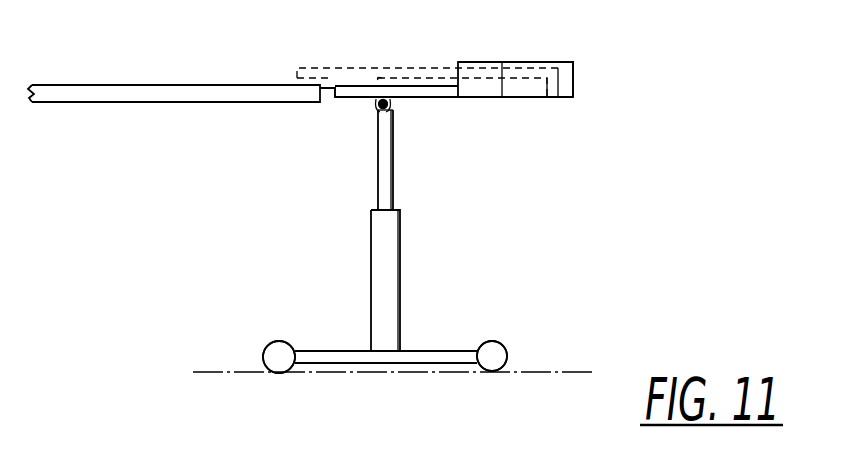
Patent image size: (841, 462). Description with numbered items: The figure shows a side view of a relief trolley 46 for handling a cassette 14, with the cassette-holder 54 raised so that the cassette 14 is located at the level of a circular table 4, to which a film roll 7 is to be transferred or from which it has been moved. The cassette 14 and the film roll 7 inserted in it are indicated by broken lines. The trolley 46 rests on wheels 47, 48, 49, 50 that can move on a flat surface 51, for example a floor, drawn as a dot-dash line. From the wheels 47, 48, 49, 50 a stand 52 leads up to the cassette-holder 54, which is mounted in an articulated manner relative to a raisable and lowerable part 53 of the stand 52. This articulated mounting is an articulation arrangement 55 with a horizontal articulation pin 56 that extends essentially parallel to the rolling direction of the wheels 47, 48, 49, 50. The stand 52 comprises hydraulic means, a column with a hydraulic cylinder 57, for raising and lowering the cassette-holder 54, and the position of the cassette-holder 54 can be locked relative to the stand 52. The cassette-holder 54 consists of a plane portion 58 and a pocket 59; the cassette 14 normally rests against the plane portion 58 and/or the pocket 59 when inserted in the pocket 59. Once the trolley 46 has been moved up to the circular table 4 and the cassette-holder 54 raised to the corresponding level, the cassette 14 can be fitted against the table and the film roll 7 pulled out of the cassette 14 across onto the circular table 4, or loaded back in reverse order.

The circular table 4 is at (196, 97).
The cassette 14 is at (335, 73).
The film roll 7 is at (415, 78).
The cassette-holder 54 is at (478, 58).
The pocket 59 is at (573, 80).
The relief trolley 46 is at (432, 186).
The articulation arrangement 55 is at (355, 105).
The articulation pin 56 is at (374, 116).
The raisable and lowerable part 53 is at (383, 188).
The hydraulic cylinder 57 is at (378, 253).
The stand 52 is at (330, 288).
The wheel 48 is at (277, 347).
The wheel 49 is at (238, 342).
The wheel 47 is at (495, 355).
The wheel 50 is at (564, 307).
The flat surface 51 is at (540, 363).
The plane portion 58 is at (422, 100).